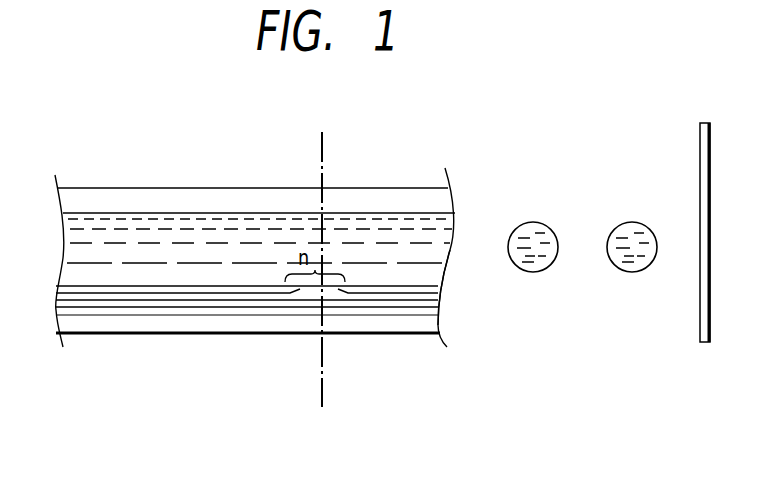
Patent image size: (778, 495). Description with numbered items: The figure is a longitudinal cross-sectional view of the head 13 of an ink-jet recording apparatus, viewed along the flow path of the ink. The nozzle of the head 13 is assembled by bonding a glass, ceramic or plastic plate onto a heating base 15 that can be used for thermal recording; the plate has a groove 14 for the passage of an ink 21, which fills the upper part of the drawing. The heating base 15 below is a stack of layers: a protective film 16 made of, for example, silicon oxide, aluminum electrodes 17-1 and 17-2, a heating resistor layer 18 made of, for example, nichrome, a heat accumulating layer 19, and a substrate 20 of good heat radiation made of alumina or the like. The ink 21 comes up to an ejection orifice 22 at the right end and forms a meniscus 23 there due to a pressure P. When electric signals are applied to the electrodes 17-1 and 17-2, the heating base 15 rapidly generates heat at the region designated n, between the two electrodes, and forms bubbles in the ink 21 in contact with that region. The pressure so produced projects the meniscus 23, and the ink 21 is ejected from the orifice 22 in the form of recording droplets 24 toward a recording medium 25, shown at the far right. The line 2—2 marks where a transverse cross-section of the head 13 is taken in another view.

The line 2— 2 is at (319, 269).
The head 13 is at (173, 188).
The groove 14 is at (235, 213).
The heating base 15 is at (234, 345).
The protective film 16 is at (107, 292).
The aluminum electrode 17-1 is at (163, 298).
The aluminum electrode 17-2 is at (413, 297).
The heating resistor layer 18 is at (233, 307).
The heat accumulating layer 19 is at (282, 312).
The substrate 20 is at (358, 325).
The ink 21 is at (85, 218).
The ejection orifice 22 is at (452, 276).
The meniscus 23 is at (452, 250).
The recording droplets 24 is at (665, 213).
The recording medium 25 is at (702, 200).